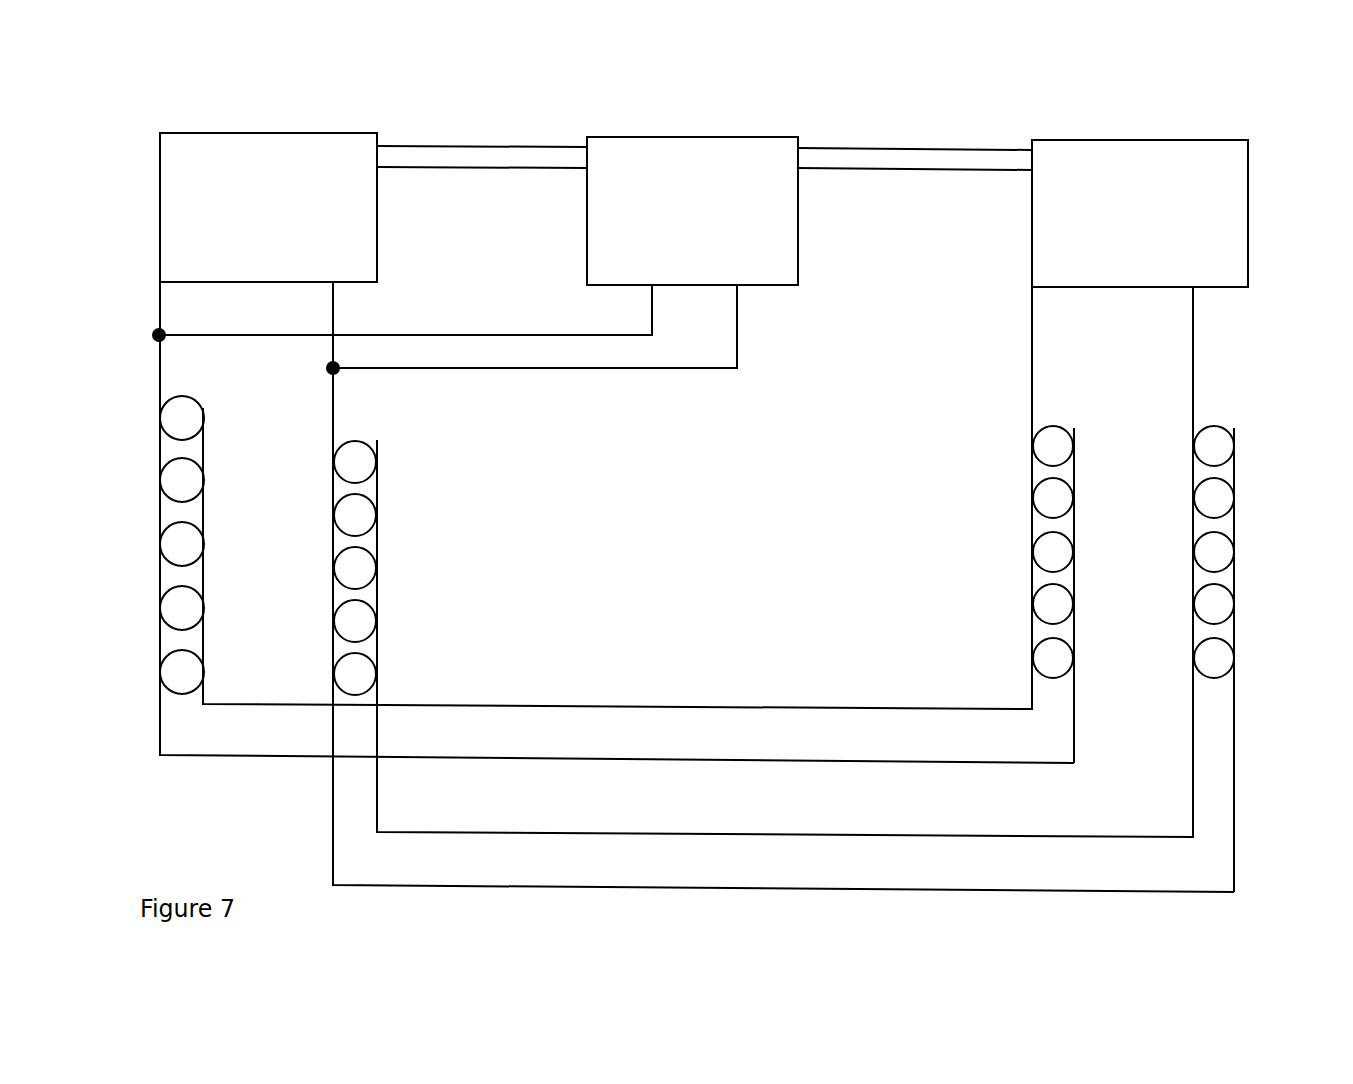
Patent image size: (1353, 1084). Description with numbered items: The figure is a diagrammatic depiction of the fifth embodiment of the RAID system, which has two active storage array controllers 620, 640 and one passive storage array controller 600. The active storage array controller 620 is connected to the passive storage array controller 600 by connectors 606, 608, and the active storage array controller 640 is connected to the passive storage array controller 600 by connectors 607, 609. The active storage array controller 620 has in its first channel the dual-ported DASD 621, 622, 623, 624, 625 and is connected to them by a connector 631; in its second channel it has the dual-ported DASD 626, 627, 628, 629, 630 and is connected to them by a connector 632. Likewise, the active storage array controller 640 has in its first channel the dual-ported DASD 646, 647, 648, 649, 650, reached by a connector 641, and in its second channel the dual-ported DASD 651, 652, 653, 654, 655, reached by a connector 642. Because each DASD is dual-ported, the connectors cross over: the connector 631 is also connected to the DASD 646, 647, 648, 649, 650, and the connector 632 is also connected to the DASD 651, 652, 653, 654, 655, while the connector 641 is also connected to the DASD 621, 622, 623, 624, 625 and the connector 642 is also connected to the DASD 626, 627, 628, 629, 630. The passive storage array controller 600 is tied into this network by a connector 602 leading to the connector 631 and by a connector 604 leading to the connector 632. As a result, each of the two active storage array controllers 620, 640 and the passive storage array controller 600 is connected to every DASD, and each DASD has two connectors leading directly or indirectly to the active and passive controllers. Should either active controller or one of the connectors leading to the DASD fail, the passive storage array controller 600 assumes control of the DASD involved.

The passive storage array controller 600 is at (692, 211).
The active storage array controller 620 is at (268, 207).
The active storage array controller 640 is at (1140, 213).
The connector 602 is at (652, 305).
The connector 604 is at (737, 305).
The connector 606 is at (428, 146).
The connector 607 is at (840, 148).
The connector 608 is at (523, 167).
The connector 609 is at (913, 168).
The dual-ported DASD 621 is at (182, 418).
The dual-ported DASD 622 is at (182, 480).
The dual-ported DASD 623 is at (182, 544).
The dual-ported DASD 624 is at (182, 608).
The dual-ported DASD 625 is at (182, 672).
The dual-ported DASD 626 is at (365, 462).
The dual-ported DASD 627 is at (365, 515).
The dual-ported DASD 628 is at (365, 568).
The dual-ported DASD 629 is at (365, 621).
The dual-ported DASD 630 is at (365, 674).
The connector 631 is at (160, 300).
The connector 632 is at (333, 302).
The connector 641 is at (1032, 297).
The connector 642 is at (1193, 330).
The dual-ported DASD 646 is at (1053, 446).
The dual-ported DASD 647 is at (1053, 498).
The dual-ported DASD 648 is at (1053, 552).
The dual-ported DASD 649 is at (1053, 604).
The dual-ported DASD 650 is at (1053, 658).
The dual-ported DASD 651 is at (1214, 446).
The dual-ported DASD 652 is at (1214, 498).
The dual-ported DASD 653 is at (1214, 552).
The dual-ported DASD 654 is at (1214, 604).
The dual-ported DASD 655 is at (1214, 658).